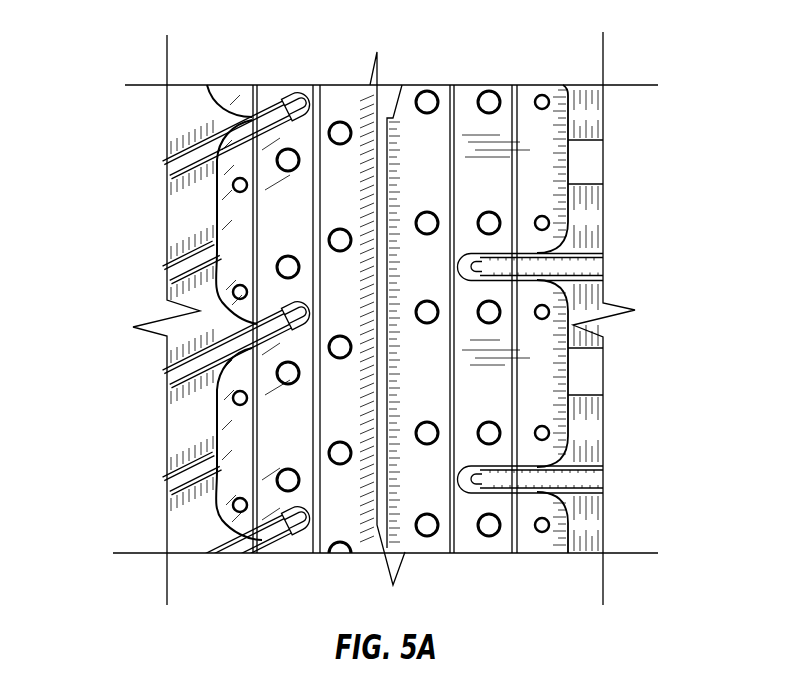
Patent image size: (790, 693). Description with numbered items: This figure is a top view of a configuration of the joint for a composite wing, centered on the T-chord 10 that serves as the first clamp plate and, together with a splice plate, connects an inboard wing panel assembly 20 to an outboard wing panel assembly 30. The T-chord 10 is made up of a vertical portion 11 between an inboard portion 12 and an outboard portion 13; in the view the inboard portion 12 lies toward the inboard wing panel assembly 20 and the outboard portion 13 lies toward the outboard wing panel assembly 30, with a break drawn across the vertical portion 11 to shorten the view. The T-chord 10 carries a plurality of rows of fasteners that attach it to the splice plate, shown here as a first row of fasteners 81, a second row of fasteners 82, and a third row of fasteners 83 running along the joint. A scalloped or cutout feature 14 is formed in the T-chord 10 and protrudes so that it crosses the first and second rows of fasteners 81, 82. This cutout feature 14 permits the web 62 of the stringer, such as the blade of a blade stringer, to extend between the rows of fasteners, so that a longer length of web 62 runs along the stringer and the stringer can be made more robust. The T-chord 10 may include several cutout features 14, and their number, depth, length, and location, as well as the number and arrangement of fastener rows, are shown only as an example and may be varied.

The T-chord 10 is at (504, 583).
The vertical portion 11 is at (381, 485).
The inboard portion 12 is at (570, 538).
The outboard portion 13 is at (192, 502).
The cutout feature 14 is at (596, 241).
The inboard wing panel assembly 20 is at (657, 333).
The outboard wing panel assembly 30 is at (130, 248).
The web 62 is at (176, 382).
The first row of fasteners 81 is at (550, 409).
The second row of fasteners 82 is at (494, 409).
The third row of fasteners 83 is at (440, 409).